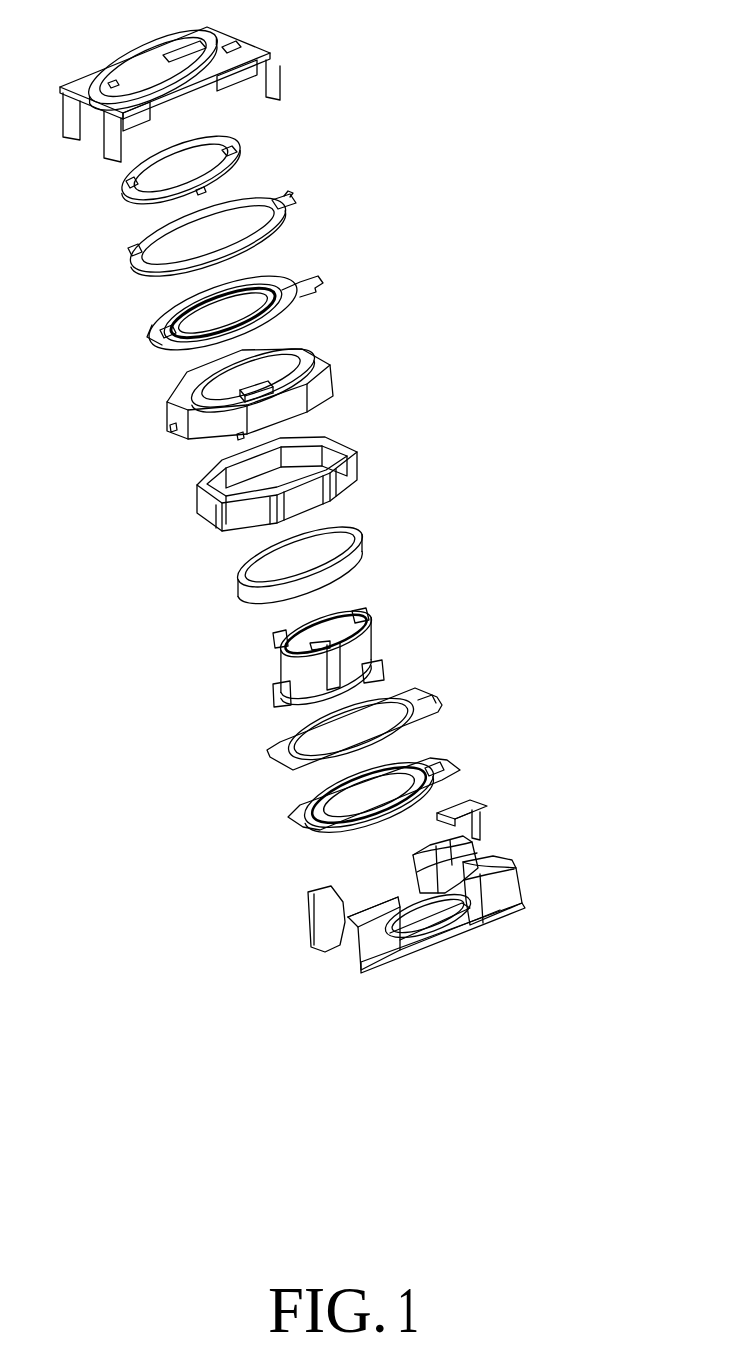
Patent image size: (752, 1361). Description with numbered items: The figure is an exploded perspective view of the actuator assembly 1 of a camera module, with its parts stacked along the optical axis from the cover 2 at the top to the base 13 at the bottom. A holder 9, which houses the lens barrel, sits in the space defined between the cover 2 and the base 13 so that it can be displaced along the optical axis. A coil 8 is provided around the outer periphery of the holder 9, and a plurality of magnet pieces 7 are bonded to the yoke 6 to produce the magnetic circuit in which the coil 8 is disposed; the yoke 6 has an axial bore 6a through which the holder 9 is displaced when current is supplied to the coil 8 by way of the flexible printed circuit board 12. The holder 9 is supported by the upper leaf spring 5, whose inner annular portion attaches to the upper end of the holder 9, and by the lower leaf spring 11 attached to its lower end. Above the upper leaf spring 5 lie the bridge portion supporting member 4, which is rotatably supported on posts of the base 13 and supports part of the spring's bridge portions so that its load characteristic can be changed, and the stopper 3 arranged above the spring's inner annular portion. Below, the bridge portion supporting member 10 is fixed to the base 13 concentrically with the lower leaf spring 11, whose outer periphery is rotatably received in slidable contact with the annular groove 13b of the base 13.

The actuator assembly 1 is at (433, 238).
The cover 2 is at (272, 60).
The stopper 3 is at (245, 147).
The bridge portion supporting member 4 is at (297, 201).
The upper leaf spring 5 is at (318, 280).
The yoke 6 is at (327, 372).
The axial bore 6a is at (300, 350).
The magnet pieces 7 is at (350, 457).
The coil 8 is at (363, 542).
The holder 9 is at (381, 660).
The bridge portion supporting member 10 is at (440, 707).
The lower leaf spring 11 is at (462, 770).
The flexible printed circuit board 12 is at (484, 817).
The base 13 is at (520, 882).
The annular groove 13b is at (463, 928).